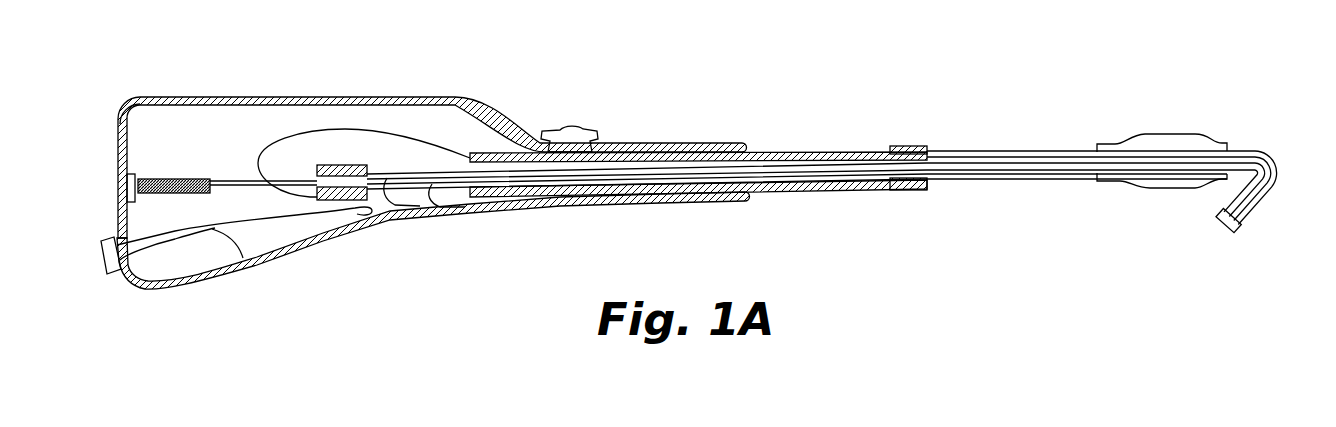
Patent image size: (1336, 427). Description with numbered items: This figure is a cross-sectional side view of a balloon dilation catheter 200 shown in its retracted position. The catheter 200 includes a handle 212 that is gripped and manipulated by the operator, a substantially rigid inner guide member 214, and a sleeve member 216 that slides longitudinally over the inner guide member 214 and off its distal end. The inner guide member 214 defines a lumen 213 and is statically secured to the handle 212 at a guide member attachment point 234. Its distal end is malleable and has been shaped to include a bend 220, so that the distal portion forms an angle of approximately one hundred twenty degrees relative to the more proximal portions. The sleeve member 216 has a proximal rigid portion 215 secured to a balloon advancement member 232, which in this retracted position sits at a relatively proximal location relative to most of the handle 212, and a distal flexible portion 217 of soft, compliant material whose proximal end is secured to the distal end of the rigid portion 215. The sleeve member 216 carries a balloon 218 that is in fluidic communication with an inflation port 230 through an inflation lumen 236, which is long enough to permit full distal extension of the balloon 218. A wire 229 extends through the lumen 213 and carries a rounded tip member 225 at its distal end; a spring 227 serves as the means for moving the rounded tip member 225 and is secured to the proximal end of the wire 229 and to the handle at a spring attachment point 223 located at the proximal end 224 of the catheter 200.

The balloon dilation catheter 200 is at (688, 76).
The handle 212 is at (266, 98).
The lumen 213 is at (387, 190).
The inner guide member 214 is at (433, 192).
The proximal rigid portion 215 is at (813, 152).
The sleeve member 216 is at (907, 189).
The distal flexible portion 217 is at (1028, 178).
The balloon 218 is at (1140, 181).
The bend 220 is at (1276, 152).
The spring attachment point 223 is at (127, 186).
The proximal end 224 is at (142, 119).
The rounded tip member 225 is at (1223, 233).
The spring 227 is at (177, 178).
The wire 229 is at (1008, 155).
The inflation port 230 is at (122, 270).
The balloon advancement member 232 is at (573, 137).
The guide member attachment point 234 is at (338, 167).
The inflation lumen 236 is at (243, 262).